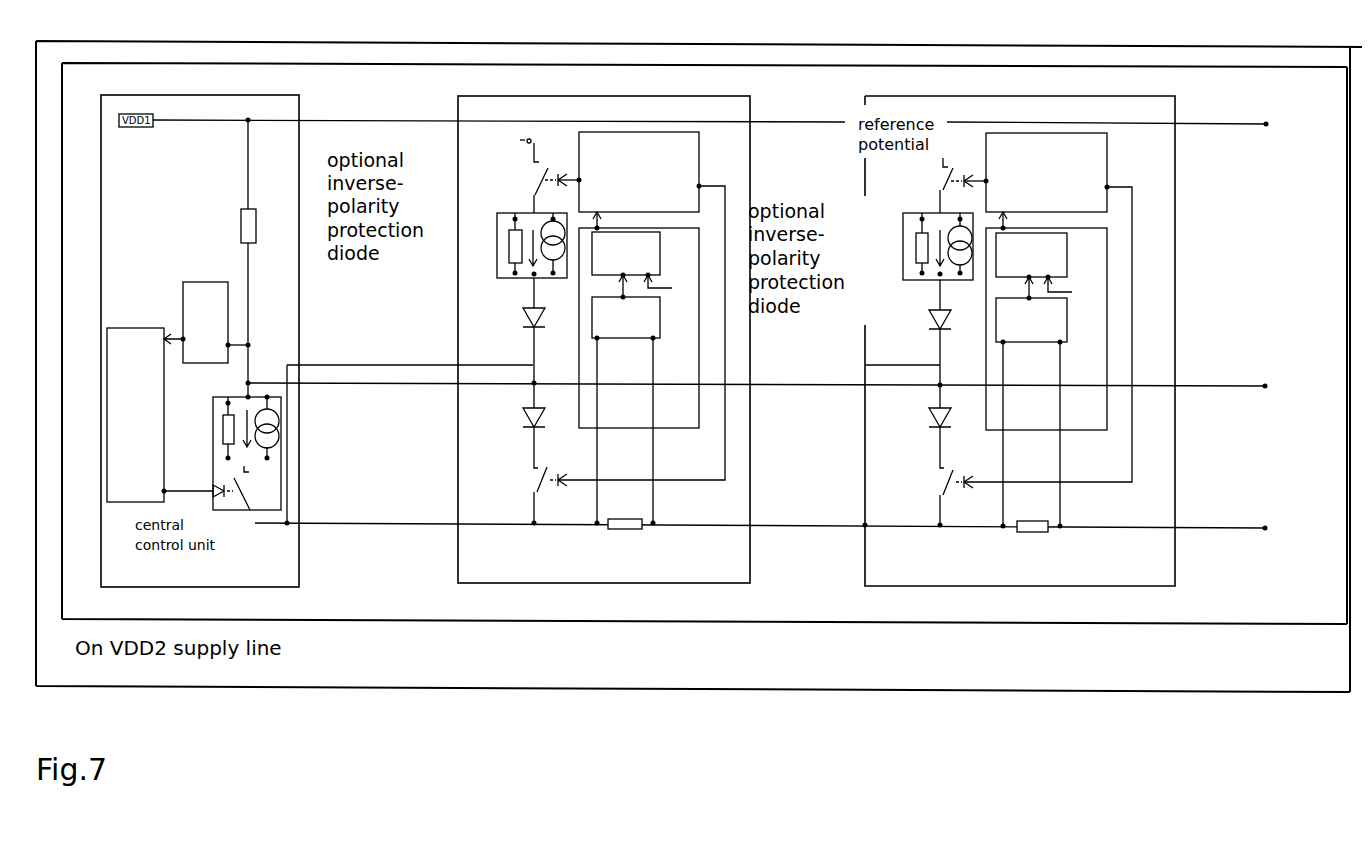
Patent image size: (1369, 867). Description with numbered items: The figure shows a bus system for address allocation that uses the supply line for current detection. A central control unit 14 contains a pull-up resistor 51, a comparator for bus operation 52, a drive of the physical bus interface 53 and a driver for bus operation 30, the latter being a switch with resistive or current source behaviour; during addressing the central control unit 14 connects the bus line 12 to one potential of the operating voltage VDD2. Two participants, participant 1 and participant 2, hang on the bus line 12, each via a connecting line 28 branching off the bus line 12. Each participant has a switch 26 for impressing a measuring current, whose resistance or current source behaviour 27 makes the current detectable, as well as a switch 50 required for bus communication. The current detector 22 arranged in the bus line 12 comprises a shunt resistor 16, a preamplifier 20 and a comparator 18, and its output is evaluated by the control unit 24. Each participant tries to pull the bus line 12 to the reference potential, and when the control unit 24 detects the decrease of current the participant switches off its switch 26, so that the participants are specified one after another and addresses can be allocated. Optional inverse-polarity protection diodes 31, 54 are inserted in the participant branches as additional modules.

The participant 1 is at (604, 339).
The participant 2 is at (1020, 341).
The bus line 12 is at (711, 325).
The central control unit 14 is at (704, 343).
The shunt resistor 16 is at (829, 432).
The comparator 18 is at (846, 266).
The preamplifier 20 is at (829, 319).
The current detector 22 is at (843, 321).
The control unit 24 is at (843, 172).
The switch 26 is at (731, 176).
The current source behaviour 27 is at (716, 246).
The connecting line 28 is at (627, 429).
The driver for BUS operation 30 is at (230, 453).
The inverse-polarity protection diode 31 is at (415, 250).
The switch 50 is at (832, 358).
The pull-up resistor 51 is at (234, 258).
The comparator for BUS operation 52 is at (207, 322).
The drive of the physical BUS interface 53 is at (160, 415).
The inverse-polarity protection diode 54 is at (415, 250).